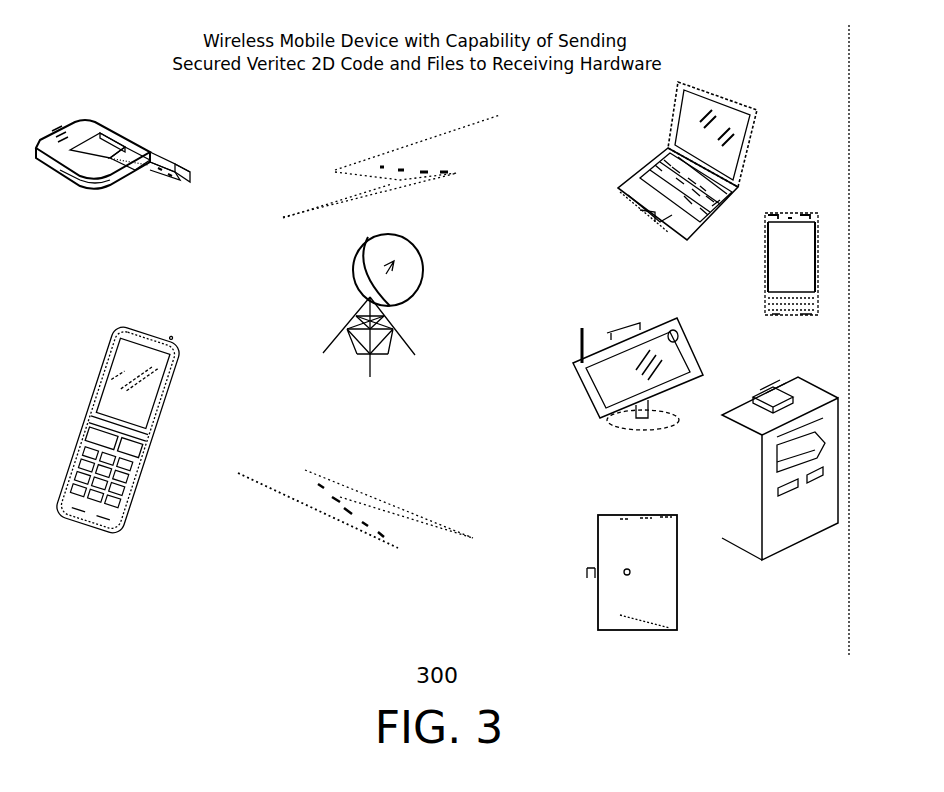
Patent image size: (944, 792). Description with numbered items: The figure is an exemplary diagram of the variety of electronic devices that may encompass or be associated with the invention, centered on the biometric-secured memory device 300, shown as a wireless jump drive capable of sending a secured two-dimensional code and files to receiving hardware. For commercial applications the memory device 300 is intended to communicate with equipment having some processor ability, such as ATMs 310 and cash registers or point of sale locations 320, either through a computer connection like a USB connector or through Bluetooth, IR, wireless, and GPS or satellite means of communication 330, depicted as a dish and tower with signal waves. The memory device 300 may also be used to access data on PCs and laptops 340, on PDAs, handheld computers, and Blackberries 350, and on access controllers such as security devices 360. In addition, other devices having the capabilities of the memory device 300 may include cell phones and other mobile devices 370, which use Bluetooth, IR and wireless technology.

The memory device 300 is at (135, 160).
The ATMs 310 is at (807, 527).
The point of sale locations 320 is at (593, 387).
The GPS or satellite means of communication 330 is at (423, 285).
The PCs and laptops 340 is at (745, 148).
The PDAs, handheld computers, and Blackberries 350 is at (800, 288).
The access controllers such as security devices 360 is at (673, 557).
The cell phones and other mobile devices 370 is at (130, 500).